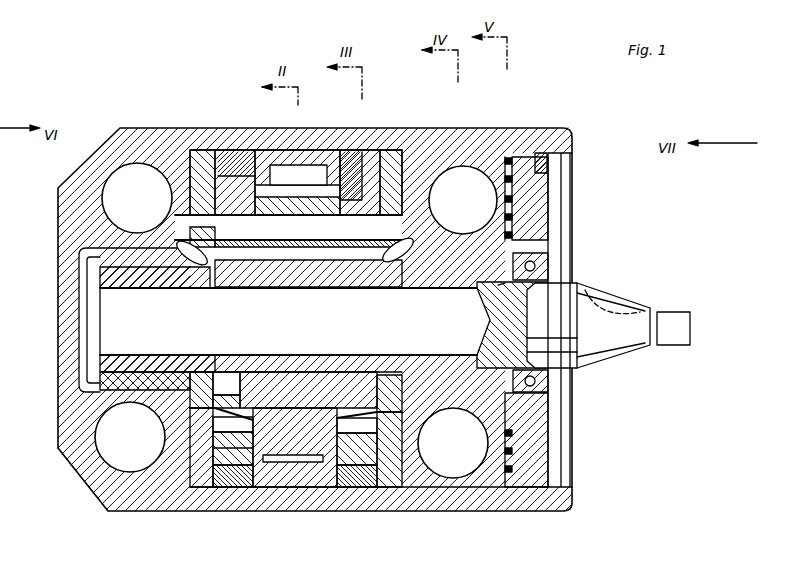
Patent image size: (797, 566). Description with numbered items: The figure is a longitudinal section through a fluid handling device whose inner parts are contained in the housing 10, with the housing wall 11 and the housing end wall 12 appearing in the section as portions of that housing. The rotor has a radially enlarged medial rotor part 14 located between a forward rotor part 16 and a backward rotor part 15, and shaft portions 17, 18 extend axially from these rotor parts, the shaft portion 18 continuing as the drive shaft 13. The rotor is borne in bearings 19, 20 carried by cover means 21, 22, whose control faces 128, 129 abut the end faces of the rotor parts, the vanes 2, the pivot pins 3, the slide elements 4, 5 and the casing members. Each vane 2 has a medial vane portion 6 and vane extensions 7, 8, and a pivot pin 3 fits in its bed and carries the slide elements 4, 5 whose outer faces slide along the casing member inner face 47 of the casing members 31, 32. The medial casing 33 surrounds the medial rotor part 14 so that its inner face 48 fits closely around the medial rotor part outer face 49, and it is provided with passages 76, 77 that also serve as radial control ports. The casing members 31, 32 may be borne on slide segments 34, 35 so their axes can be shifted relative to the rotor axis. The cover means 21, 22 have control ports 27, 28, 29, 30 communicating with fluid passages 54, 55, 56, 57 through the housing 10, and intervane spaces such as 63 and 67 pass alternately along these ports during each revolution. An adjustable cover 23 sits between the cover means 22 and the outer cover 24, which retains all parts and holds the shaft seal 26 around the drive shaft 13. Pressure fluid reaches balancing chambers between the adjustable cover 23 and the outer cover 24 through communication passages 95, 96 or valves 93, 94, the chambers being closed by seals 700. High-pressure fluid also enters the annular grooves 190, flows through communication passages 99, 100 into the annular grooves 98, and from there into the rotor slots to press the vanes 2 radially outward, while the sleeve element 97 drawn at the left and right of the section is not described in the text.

The vane 2 is at (296, 270).
The pivot pin 3 is at (288, 227).
The slide element 4 is at (355, 212).
The slide element 5 is at (240, 210).
The medial vane portion 6 is at (275, 205).
The vane extension 7 is at (222, 272).
The vane extension 8 is at (362, 262).
The housing 10 is at (428, 503).
The housing 11 is at (65, 413).
The end cap 12 is at (515, 505).
The drive shaft 13 is at (624, 342).
The radially enlarged medial rotor part 14 is at (300, 505).
The backward rotor part 15 is at (269, 378).
The forward rotor part 16 is at (351, 380).
The shaft portion 17 is at (126, 355).
The shaft portion 18 is at (411, 376).
The bearing 19 is at (128, 380).
The bearing 20 is at (445, 372).
The cover means 21 is at (195, 500).
The cover means 22 is at (393, 505).
The adjustable cover 23 is at (480, 500).
The outer cover 24 is at (548, 410).
The shaft seal 26 is at (530, 258).
The control port 27 is at (195, 222).
The control port 28 is at (402, 216).
The control port 29 is at (193, 421).
The control port 30 is at (403, 437).
The casing member 31 is at (245, 505).
The casing member 32 is at (343, 505).
The medial casing 33 is at (303, 510).
The slide segment 34 is at (241, 165).
The slide segment 35 is at (351, 165).
The casing member inner face 47 is at (295, 425).
The inner face 48 is at (264, 445).
The medial rotor part outer face 49 is at (312, 456).
The fluid passage 54 is at (137, 198).
The fluid passage 55 is at (130, 437).
The fluid passage 56 is at (463, 200).
The fluid passage 57 is at (453, 443).
The intervane space 63 is at (258, 428).
The intervane space 67 is at (337, 420).
The passage 76 is at (309, 181).
The passage 77 is at (283, 505).
The valve 93 is at (500, 172).
The valve 94 is at (495, 478).
The communication passage 95 is at (533, 227).
The communication passage 96 is at (540, 432).
The sleeve 97 is at (107, 312).
The annular groove 98 is at (383, 262).
The communication passage 99 is at (408, 265).
The communication passage 100 is at (182, 290).
The control face 128 is at (373, 185).
The control face 129 is at (226, 168).
The annular groove 190 is at (188, 250).
The seal 700 is at (505, 160).